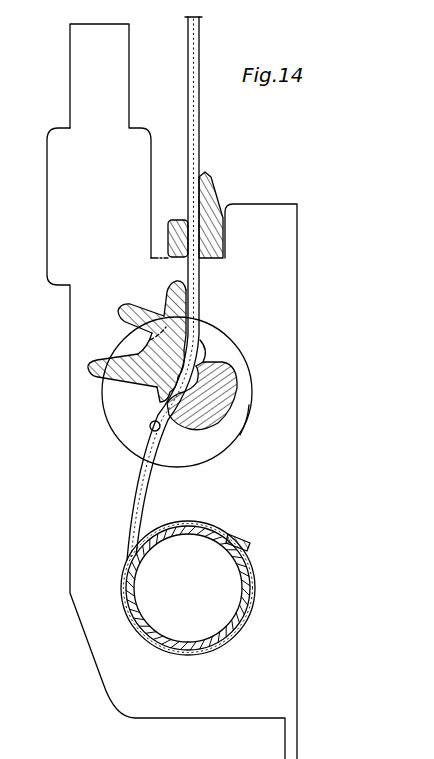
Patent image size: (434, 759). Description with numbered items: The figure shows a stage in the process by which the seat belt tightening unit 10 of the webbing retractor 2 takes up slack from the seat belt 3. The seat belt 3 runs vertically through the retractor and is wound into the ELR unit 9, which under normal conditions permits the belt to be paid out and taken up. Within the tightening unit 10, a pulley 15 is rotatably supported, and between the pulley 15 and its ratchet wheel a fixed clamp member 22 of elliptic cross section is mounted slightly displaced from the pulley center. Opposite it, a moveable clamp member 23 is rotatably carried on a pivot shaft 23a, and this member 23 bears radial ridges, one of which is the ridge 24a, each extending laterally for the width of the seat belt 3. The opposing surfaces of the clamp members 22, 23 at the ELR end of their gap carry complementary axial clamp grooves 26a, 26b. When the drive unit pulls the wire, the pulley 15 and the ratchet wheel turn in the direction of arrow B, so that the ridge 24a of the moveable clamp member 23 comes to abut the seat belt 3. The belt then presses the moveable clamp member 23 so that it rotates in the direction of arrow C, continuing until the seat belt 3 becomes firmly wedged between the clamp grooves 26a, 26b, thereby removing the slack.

The webbing retractor 2 is at (308, 240).
The seat belt 3 is at (200, 148).
The ELR unit 9 is at (197, 550).
The seat belt tightening unit 10 is at (254, 341).
The pulley 15 is at (252, 418).
The fixed clamp member 22 is at (240, 372).
The moveable clamp member 23 is at (142, 385).
The pivot shaft 23a is at (148, 352).
The ridge 24a is at (192, 278).
The clamp groove 26a is at (163, 425).
The clamp groove 26b is at (205, 363).
The direction of pulley rotation B is at (92, 412).
The direction of moveable clamp member rotation C is at (163, 298).